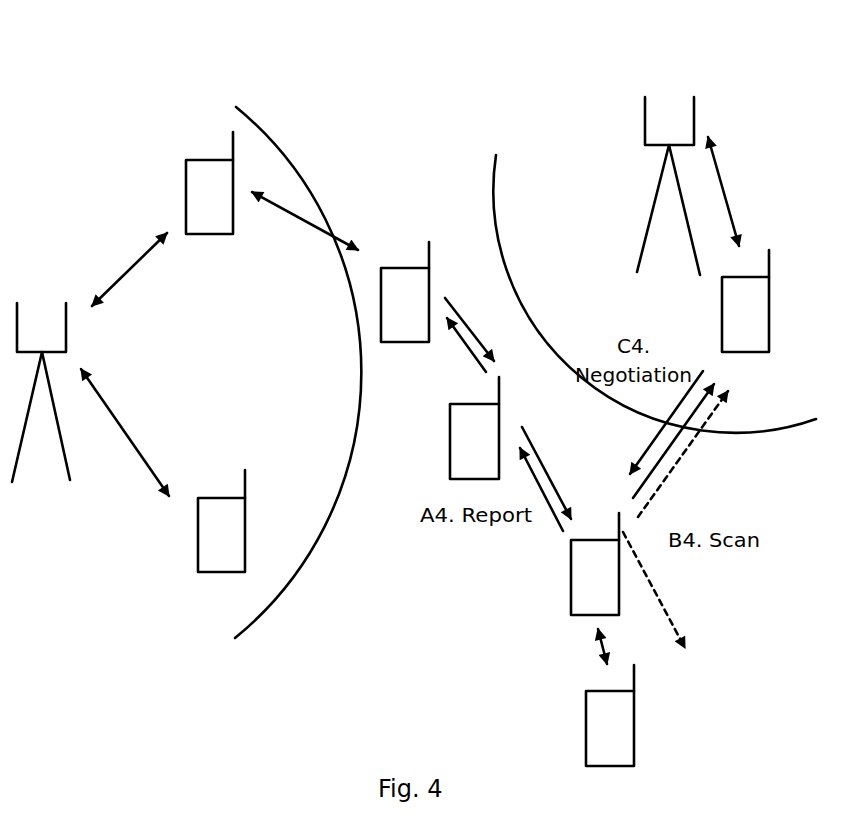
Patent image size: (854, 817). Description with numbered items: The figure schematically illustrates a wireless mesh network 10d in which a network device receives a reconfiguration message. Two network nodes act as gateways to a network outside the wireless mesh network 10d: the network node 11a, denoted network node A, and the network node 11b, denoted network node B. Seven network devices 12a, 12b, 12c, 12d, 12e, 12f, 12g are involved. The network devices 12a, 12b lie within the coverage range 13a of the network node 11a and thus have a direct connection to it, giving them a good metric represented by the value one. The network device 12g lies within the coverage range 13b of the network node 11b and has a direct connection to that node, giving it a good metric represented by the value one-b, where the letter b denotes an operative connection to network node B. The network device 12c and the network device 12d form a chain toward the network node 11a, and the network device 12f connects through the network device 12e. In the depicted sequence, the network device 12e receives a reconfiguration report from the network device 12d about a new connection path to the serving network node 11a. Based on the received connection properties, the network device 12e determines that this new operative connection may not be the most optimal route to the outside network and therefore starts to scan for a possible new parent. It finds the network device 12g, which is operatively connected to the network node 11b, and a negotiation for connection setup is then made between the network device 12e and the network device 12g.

The wireless mesh network 10d is at (546, 95).
The network node 11a is at (65, 448).
The network node 11b is at (652, 218).
The network device 12a is at (186, 183).
The network device 12b is at (198, 547).
The network device 12c is at (381, 293).
The network device 12d is at (450, 415).
The network device 12e is at (571, 565).
The network device 12f is at (586, 722).
The network device 12g is at (722, 300).
The coverage range 13a is at (282, 595).
The coverage range 13b is at (496, 190).